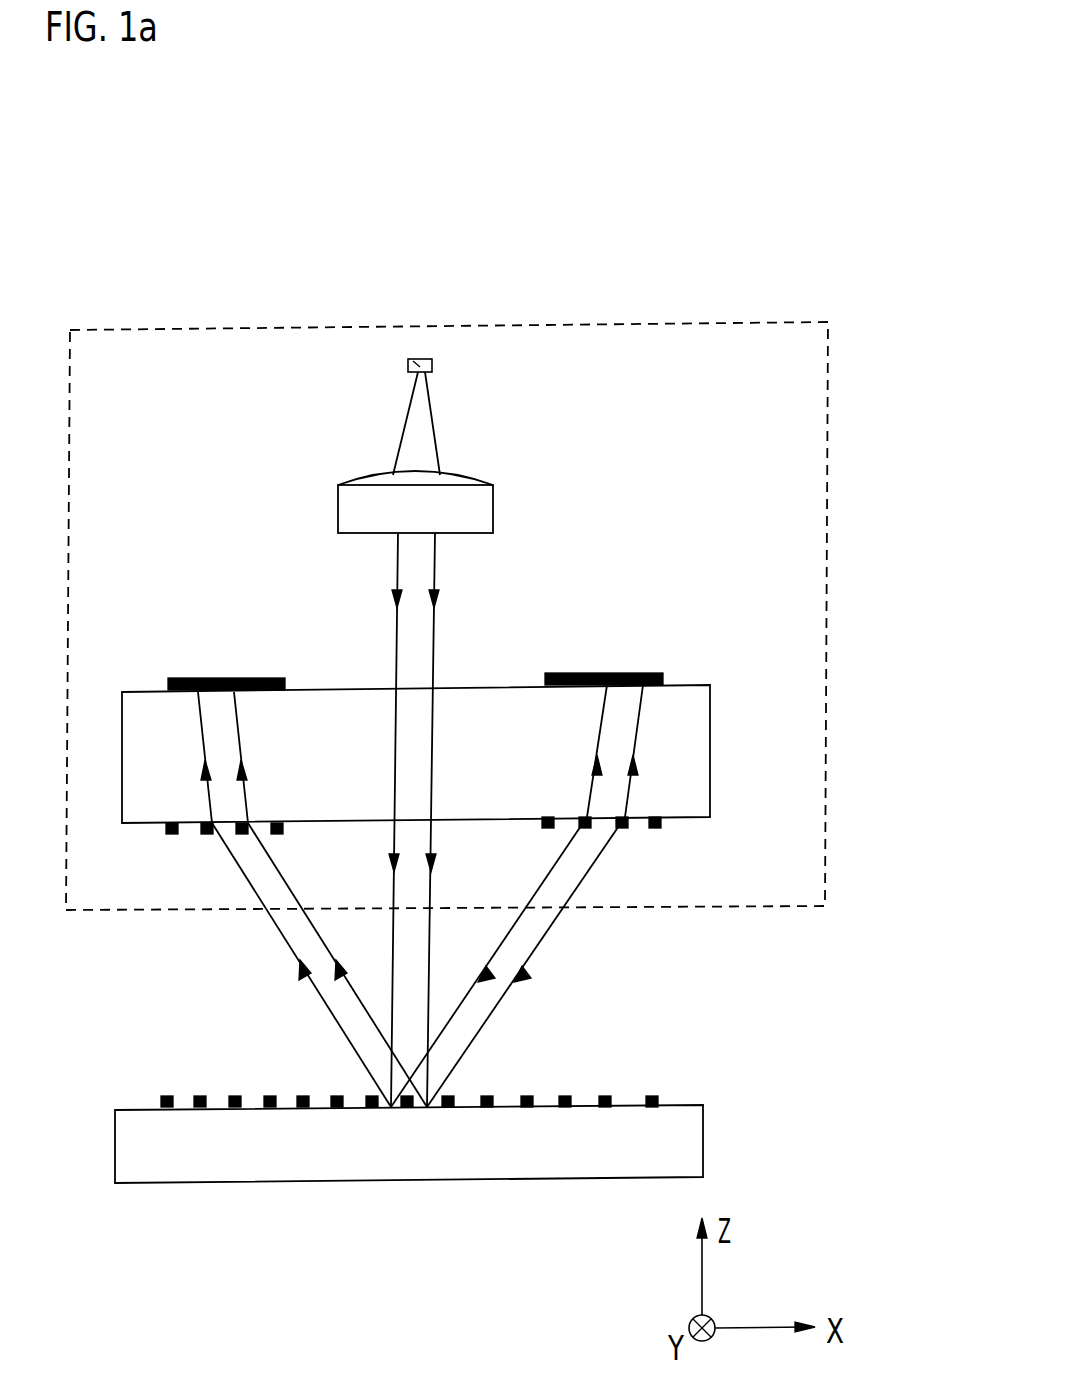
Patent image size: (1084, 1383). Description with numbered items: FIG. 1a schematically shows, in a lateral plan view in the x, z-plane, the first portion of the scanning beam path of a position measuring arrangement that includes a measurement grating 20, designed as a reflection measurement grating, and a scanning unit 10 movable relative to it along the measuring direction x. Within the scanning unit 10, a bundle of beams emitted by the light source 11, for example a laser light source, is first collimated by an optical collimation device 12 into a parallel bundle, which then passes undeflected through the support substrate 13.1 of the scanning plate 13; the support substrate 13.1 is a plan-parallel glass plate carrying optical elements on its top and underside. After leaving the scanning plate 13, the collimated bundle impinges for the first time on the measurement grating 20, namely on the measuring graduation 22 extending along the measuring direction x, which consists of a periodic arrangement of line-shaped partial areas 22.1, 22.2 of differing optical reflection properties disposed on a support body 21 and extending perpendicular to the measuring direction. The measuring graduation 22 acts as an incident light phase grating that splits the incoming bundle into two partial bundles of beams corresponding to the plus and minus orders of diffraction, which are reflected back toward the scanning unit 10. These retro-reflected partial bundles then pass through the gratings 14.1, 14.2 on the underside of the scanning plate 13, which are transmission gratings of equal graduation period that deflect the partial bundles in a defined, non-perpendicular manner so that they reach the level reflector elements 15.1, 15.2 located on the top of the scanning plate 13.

The scanning unit 10 is at (848, 478).
The light source 11 is at (408, 363).
The optical collimation device 12 is at (350, 510).
The scanning plate 13 is at (503, 782).
The support substrate 13.1 is at (688, 698).
The grating 14.1 is at (218, 850).
The grating 14.2 is at (633, 840).
The reflector element 15.1 is at (228, 677).
The reflector element 15.2 is at (635, 673).
The measurement grating 20 is at (475, 1142).
The support body 21 is at (610, 1150).
The measuring graduation 22 is at (436, 1056).
The partial area 22.1 is at (167, 1095).
The partial area 22.2 is at (186, 1097).